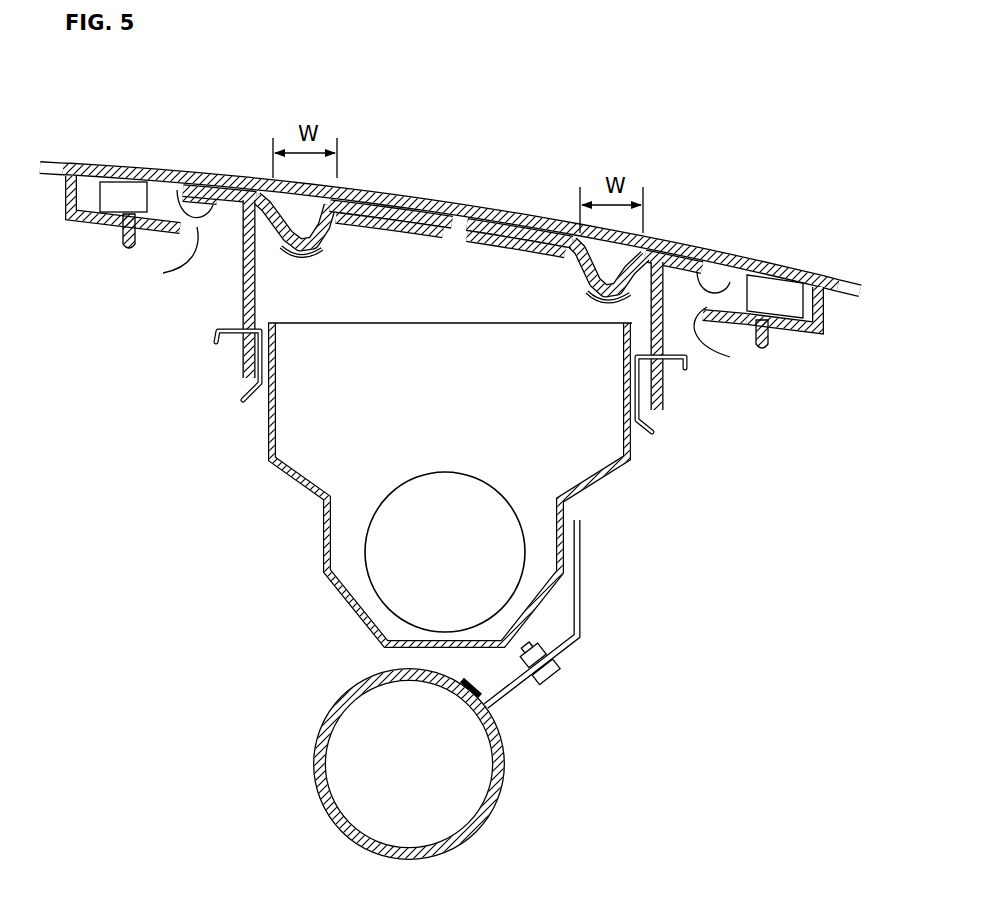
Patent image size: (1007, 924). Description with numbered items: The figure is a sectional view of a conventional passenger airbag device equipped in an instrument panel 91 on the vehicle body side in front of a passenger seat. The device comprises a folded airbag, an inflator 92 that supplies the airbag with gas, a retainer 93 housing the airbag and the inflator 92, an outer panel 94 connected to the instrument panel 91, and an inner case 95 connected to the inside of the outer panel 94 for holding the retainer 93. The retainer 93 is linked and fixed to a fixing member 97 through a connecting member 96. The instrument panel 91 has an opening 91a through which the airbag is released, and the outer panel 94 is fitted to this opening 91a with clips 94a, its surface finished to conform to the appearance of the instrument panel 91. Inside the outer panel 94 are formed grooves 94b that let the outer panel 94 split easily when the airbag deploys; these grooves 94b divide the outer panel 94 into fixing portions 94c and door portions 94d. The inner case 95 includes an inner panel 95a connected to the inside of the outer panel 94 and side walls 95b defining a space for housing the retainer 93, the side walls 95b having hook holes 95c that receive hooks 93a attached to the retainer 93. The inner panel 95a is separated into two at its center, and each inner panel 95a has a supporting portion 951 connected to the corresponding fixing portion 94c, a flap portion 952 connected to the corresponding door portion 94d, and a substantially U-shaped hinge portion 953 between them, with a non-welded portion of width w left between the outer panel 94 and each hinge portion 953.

The instrument panel 91 is at (68, 162).
The opening 91a is at (441, 307).
The inflator 92 is at (400, 570).
The retainer 93 is at (597, 488).
The hooks 93a is at (217, 340).
The outer panel 94 is at (438, 187).
The clips 94a is at (130, 205).
The grooves 94b is at (270, 178).
The fixing portions 94c is at (213, 177).
The door portions 94d is at (383, 192).
The inner case 95 is at (439, 344).
The inner panel 95a is at (385, 242).
The side walls 95b is at (245, 375).
The hook holes 95c is at (240, 318).
The connecting member 96 is at (570, 640).
The fixing member 97 is at (317, 747).
The supporting portion 951 is at (170, 185).
The flap portion 952 is at (410, 227).
The hinge portion 953 is at (305, 252).